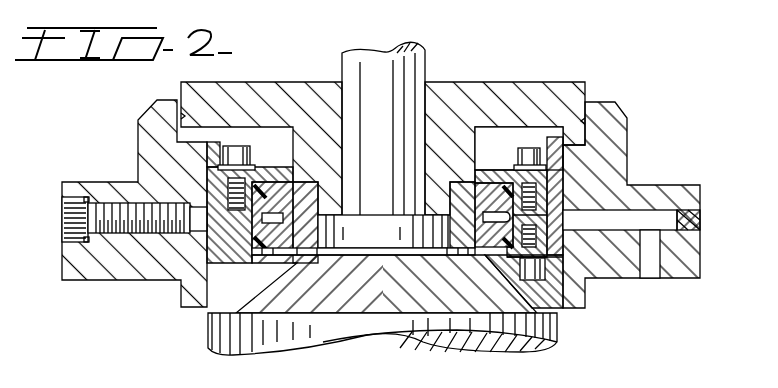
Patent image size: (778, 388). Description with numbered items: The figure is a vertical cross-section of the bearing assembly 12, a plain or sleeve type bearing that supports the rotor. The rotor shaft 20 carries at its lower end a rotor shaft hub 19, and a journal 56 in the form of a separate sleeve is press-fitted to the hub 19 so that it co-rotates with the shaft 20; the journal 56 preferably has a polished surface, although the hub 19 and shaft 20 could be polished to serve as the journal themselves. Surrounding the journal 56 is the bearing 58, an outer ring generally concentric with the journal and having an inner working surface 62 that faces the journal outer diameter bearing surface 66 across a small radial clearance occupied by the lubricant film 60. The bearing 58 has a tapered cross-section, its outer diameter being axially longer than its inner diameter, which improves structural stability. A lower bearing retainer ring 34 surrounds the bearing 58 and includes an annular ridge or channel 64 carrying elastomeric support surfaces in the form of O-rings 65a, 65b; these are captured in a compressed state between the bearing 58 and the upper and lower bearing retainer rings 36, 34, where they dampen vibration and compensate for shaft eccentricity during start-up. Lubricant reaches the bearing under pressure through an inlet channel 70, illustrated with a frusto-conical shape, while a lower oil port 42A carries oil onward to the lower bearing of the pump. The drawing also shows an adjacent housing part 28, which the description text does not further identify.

The bearing assembly 12 is at (557, 127).
The rotor shaft hub 19 is at (443, 118).
The shaft 20 is at (360, 148).
The side block 28 is at (617, 164).
The lower bearing retainer ring 34 is at (220, 247).
The upper bearing retainer ring 36 is at (240, 173).
The lower oil port 42A is at (612, 222).
The journal 56 is at (462, 238).
The bearing 58 is at (271, 205).
The lubricant film 60 is at (482, 188).
The inner working surface 62 is at (300, 233).
The annular ridge or channel 64 is at (258, 262).
The O-ring 65a is at (503, 257).
The O-ring 65b is at (510, 190).
The journal outer diameter bearing surface 66 is at (290, 188).
The inlet channel 70 is at (648, 267).